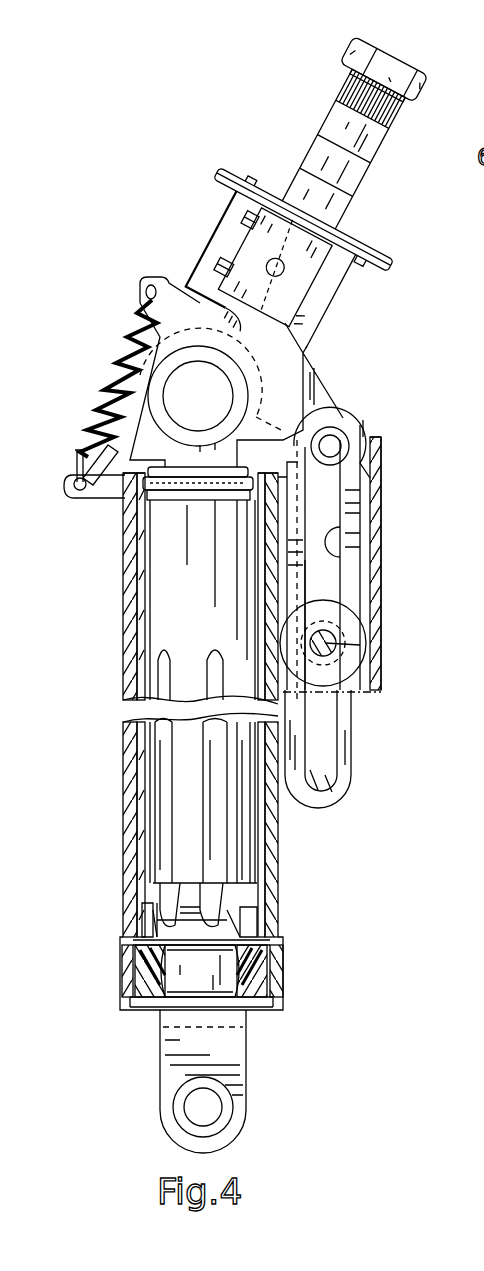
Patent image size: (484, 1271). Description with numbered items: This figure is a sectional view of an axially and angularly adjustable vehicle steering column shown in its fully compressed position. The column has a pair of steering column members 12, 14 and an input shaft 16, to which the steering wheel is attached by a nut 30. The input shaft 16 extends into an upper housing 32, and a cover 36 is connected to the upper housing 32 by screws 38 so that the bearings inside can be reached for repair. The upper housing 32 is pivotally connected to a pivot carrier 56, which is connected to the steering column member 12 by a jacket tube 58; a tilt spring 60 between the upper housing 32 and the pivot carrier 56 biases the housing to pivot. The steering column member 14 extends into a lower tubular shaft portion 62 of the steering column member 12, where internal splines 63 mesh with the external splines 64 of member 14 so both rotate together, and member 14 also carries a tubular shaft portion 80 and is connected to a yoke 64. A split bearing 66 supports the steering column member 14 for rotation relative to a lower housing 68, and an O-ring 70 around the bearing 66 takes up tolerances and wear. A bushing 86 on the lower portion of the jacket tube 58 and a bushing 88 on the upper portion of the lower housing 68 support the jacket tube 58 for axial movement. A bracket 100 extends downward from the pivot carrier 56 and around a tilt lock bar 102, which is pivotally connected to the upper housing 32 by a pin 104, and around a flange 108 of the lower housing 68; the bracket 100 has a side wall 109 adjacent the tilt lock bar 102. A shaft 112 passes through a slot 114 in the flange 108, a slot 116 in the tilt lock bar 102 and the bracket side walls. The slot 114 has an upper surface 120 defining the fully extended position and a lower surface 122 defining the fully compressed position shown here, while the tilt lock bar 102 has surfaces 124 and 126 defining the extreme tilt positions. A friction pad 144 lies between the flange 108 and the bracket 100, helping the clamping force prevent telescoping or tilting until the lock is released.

The steering column member 12 is at (187, 740).
The steering column member 14 is at (240, 928).
The input shaft 16 is at (330, 145).
The nut 30 is at (355, 48).
The upper housing 32 is at (190, 295).
The cover 36 is at (237, 190).
The screws 38 is at (217, 268).
The pivot carrier 56 is at (95, 455).
The jacket tube 58 is at (140, 602).
The tilt spring 60 is at (125, 386).
The lower tubular shaft portion 62 is at (193, 780).
The internal splines 63 is at (167, 833).
The external splines / yoke 64 is at (177, 1061).
The split bearing 66 is at (140, 975).
The lower housing 68 is at (130, 860).
The O-ring 70 is at (268, 970).
The tubular shaft portion 80 is at (253, 884).
The bushing 86 is at (157, 897).
The bushing 88 is at (122, 490).
The bracket 100 is at (377, 492).
The tilt lock bar 102 is at (327, 808).
The pin 104 is at (340, 423).
The flange 108 is at (352, 512).
The side wall 109 is at (385, 567).
The shaft 112 is at (334, 637).
The slot 114 is at (363, 580).
The slot 116 is at (335, 725).
The upper surface 120 is at (378, 447).
The lower surface 122 is at (338, 644).
The surface 124 is at (357, 613).
The surface 126 is at (307, 790).
The friction pad 144 is at (378, 660).